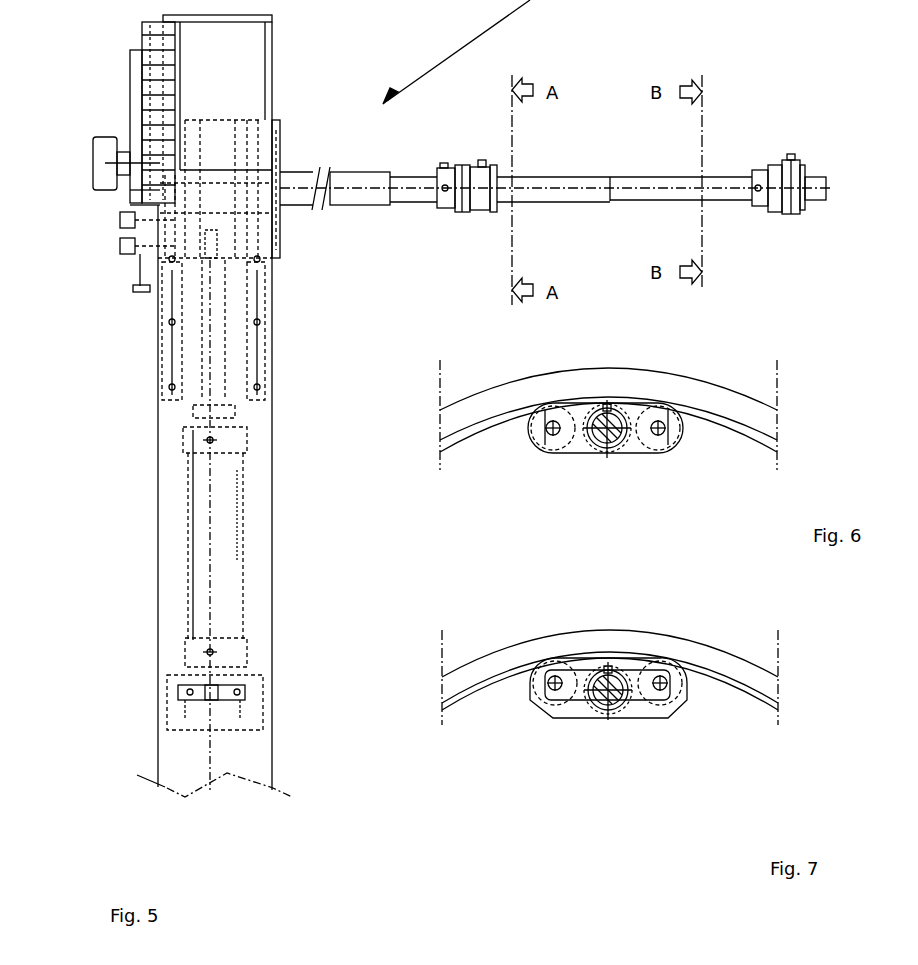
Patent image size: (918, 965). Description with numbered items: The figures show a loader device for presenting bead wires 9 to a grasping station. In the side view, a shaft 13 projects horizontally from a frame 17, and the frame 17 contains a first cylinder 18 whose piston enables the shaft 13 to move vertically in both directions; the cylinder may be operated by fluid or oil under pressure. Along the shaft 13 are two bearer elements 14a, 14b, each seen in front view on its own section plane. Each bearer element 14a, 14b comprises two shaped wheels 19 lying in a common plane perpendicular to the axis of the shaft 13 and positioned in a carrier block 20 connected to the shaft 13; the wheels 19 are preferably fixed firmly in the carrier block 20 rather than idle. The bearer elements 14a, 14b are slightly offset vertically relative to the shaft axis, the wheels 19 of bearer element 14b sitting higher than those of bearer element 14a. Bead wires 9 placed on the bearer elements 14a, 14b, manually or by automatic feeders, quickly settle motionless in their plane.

In FIG. 6, the bead wire 9 is at (705, 387).
In FIG. 7, the bead wire 9 is at (708, 653).
In FIG. 5, the shaft 13 is at (375, 200).
In FIG. 6, the shaft 13 is at (597, 448).
In FIG. 7, the shaft 13 is at (602, 712).
In FIG. 5, the bearer element 14a is at (485, 210).
In FIG. 6, the bearer element 14a is at (535, 465).
In FIG. 5, the bearer element 14b is at (803, 200).
In FIG. 7, the bearer element 14b is at (545, 737).
In FIG. 5, the frame 17 is at (172, 413).
In FIG. 5, the first cylinder 18 is at (205, 537).
In FIG. 6, the shaped wheel 19 is at (660, 445).
In FIG. 7, the shaped wheel 19 is at (660, 698).
In FIG. 6, the carrier block 20 is at (633, 445).
In FIG. 7, the carrier block 20 is at (640, 708).